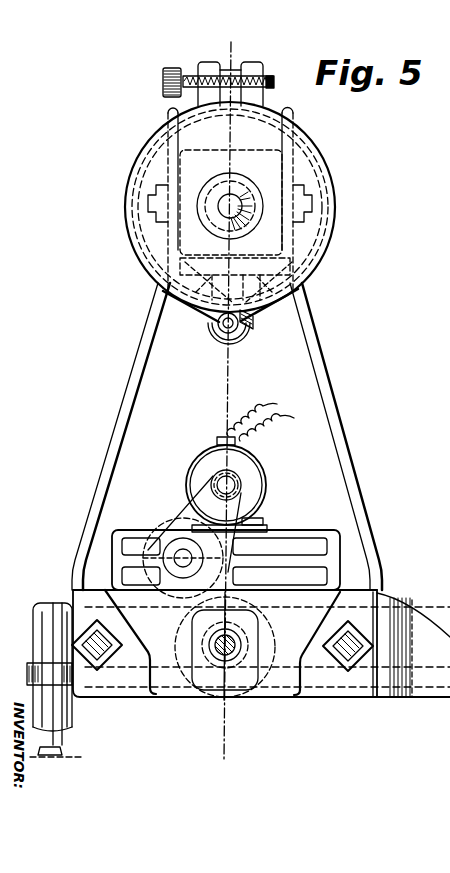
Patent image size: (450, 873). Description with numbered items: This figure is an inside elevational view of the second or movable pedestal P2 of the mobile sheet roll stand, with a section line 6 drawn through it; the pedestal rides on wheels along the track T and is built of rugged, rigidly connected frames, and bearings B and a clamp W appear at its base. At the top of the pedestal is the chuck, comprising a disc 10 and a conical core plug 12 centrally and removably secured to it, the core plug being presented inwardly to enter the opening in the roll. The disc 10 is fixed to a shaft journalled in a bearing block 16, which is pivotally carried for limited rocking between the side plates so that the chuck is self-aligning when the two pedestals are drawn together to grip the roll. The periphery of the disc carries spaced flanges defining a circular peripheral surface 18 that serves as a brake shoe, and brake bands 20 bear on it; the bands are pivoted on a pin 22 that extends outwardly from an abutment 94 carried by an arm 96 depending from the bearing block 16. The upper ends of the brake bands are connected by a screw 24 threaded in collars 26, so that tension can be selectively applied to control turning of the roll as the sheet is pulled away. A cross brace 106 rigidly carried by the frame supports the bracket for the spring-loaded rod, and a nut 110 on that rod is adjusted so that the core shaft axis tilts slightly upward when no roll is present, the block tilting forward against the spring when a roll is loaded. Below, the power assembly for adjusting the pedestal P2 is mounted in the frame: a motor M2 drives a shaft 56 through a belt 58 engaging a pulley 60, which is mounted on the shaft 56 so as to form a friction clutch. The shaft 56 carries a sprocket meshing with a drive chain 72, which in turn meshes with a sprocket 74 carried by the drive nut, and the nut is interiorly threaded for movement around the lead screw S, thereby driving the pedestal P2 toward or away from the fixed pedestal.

The section line 6- 6 is at (267, 50).
The disc 10 is at (145, 184).
The conical core plug 12 is at (214, 214).
The bearing block 16 is at (265, 150).
The circular peripheral surface 18 is at (140, 152).
The brake bands 20 is at (218, 342).
The pin 22 is at (225, 326).
The screw 24 is at (185, 95).
The collars 26 is at (200, 62).
The shaft 56 is at (181, 552).
The belt 58 is at (244, 506).
The pulley 60 is at (158, 528).
The drive chain 72 is at (165, 686).
The sprocket 74 is at (194, 701).
The abutment 94 is at (243, 330).
The arm 96 is at (158, 300).
The cross brace 106 is at (325, 270).
The nut 110 is at (302, 286).
The second or movable pedestal P2 is at (124, 375).
The motor M2 is at (250, 470).
The bearings B is at (100, 632).
The lead screw S is at (228, 658).
The clamp W is at (48, 700).
The track T is at (55, 742).